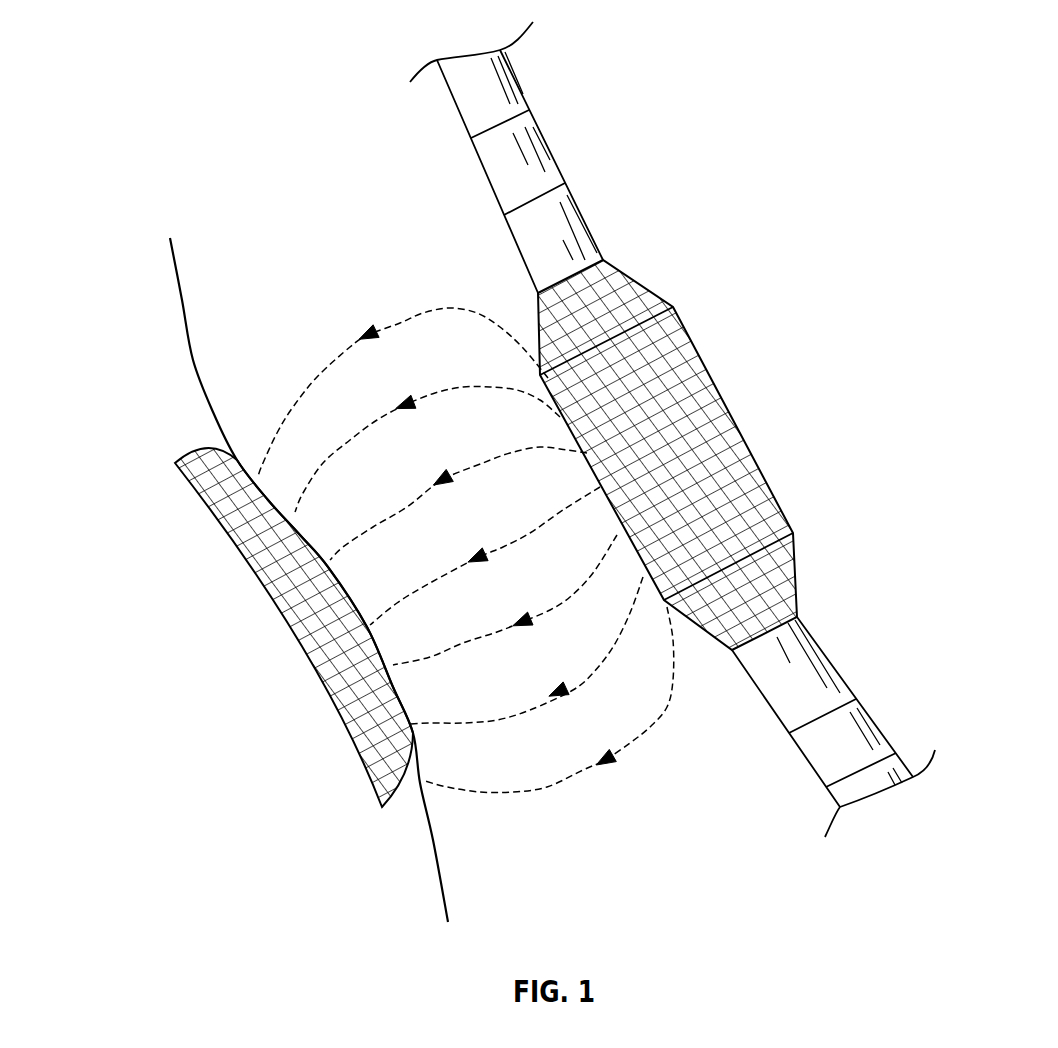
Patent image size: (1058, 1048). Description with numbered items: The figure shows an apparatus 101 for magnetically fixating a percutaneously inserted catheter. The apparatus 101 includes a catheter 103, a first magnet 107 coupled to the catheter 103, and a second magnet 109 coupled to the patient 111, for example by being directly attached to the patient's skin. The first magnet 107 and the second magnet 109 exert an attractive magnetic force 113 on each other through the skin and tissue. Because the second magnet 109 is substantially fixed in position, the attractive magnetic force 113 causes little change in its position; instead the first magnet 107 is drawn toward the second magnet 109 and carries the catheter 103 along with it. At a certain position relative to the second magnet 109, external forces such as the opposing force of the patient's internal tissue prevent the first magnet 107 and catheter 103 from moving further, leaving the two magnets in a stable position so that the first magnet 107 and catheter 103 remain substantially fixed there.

The apparatus 101 is at (129, 170).
The catheter 103 is at (880, 732).
The first magnet 107 is at (737, 425).
The second magnet 109 is at (300, 643).
The patient 111 is at (438, 862).
The attractive magnetic force 113 is at (730, 728).